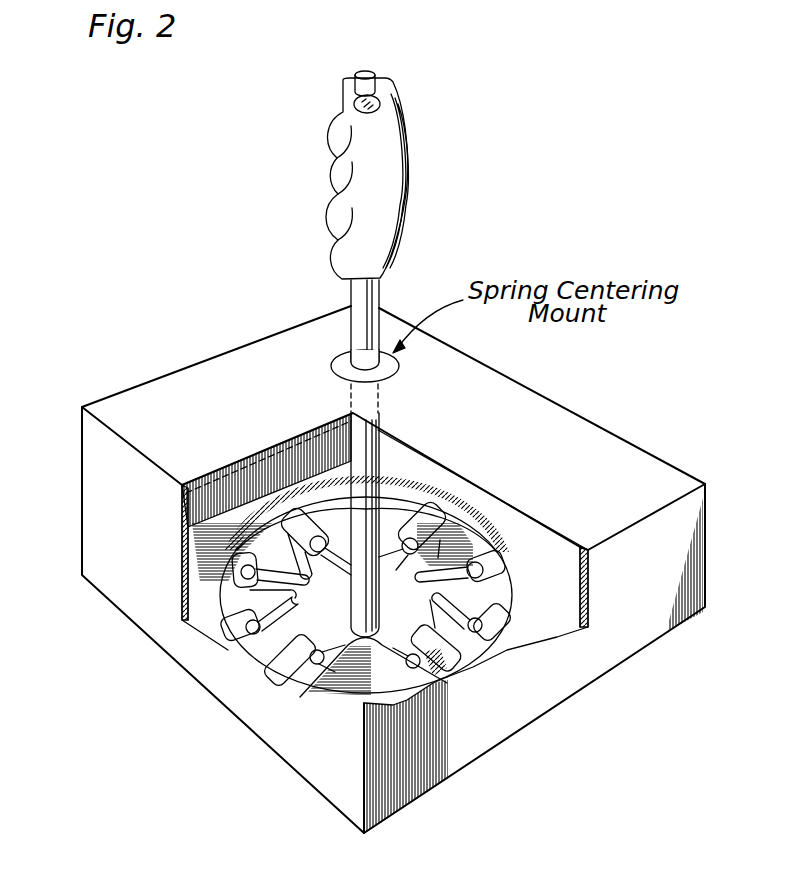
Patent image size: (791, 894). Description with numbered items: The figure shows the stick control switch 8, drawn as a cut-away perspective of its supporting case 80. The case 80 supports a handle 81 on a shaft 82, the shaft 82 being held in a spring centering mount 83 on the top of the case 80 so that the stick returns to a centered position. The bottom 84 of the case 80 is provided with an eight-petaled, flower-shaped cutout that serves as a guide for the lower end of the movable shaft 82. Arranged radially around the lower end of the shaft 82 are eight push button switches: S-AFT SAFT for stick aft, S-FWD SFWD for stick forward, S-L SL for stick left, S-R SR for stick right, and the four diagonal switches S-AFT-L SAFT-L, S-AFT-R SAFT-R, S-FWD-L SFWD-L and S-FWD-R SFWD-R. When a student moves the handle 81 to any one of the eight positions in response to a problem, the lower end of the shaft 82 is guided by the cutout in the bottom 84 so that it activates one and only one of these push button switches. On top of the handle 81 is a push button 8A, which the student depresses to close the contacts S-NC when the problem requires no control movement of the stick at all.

The stick control switch 8 is at (440, 206).
The push button 8A is at (376, 76).
The contacts S-NC is at (381, 104).
The handle 81 is at (330, 180).
The shaft 82 is at (377, 480).
The spring centering mount 83 is at (333, 362).
The supporting case 80 is at (603, 425).
The bottom 84 is at (232, 709).
The push button switch S-AFT SAFT is at (296, 532).
The push button switch S-AFT-L SAFT-L is at (425, 512).
The push button switch S-AFT-R SAFT-R is at (190, 571).
The push button switch S-L SL is at (505, 569).
The push button switch S-R SR is at (267, 660).
The push button switch S-FWD SFWD is at (433, 677).
The push button switch S-FWD-L SFWD-L is at (497, 627).
The push button switch S-FWD-R SFWD-R is at (298, 680).